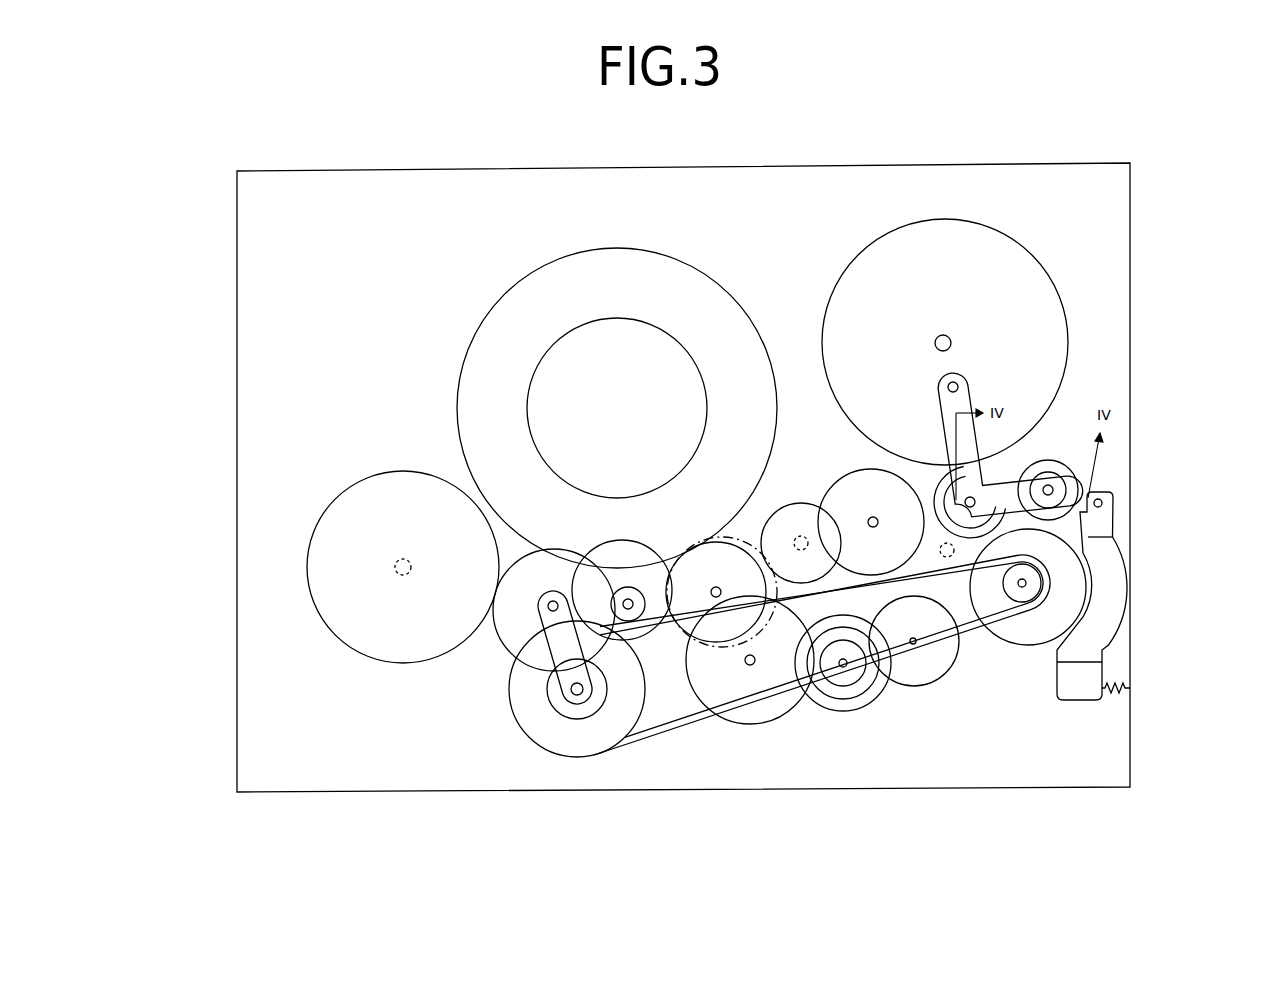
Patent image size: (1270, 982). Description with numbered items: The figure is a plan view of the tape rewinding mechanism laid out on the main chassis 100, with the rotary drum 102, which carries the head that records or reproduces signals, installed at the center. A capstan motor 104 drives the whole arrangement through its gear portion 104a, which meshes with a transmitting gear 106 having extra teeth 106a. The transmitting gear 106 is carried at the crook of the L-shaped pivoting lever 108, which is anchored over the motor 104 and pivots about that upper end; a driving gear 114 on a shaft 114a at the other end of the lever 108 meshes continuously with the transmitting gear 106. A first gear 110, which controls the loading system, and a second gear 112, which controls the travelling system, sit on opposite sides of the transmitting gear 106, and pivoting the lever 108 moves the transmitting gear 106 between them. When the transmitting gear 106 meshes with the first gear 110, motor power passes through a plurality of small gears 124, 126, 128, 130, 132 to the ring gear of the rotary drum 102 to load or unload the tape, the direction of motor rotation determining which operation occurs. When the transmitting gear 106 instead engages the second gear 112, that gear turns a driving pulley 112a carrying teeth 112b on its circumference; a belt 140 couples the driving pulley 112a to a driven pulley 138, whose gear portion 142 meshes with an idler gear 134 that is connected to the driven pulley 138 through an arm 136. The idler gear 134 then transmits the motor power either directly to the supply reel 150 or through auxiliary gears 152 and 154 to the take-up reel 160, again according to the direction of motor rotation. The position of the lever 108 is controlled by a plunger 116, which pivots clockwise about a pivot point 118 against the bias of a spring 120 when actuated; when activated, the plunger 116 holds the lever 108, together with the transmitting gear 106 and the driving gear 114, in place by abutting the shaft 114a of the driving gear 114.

The main chassis 100 is at (450, 170).
The rotary drum 102 is at (668, 248).
The capstan motor 104 is at (967, 297).
The gear portion 104a is at (993, 463).
The transmitting gear 106 is at (993, 480).
The extra teeth 106a is at (943, 493).
The pivoting lever 108 is at (1022, 495).
The first gear 110 is at (852, 482).
The second gear 112 is at (1070, 578).
The driving pulley 112a is at (1022, 583).
The teeth 112b is at (1098, 625).
The driving gear 114 is at (1093, 468).
The shaft 114a is at (1099, 504).
The plunger 116 is at (1075, 698).
The pivot point 118 is at (1077, 492).
The spring 120 is at (1125, 700).
The small gear 124 is at (847, 673).
The small gear 126 is at (913, 675).
The small gear 128 is at (820, 697).
The small gear 130 is at (748, 718).
The small gear 132 is at (684, 645).
The idler gear 134 is at (517, 643).
The arm 136 is at (521, 658).
The driven pulley 138 is at (570, 747).
The belt 140 is at (640, 622).
The gear portion 142 is at (537, 743).
The supply reel 150 is at (305, 568).
The auxiliary gear 152 is at (695, 555).
The auxiliary gear 154 is at (775, 525).
The take-up reel 160 is at (970, 632).